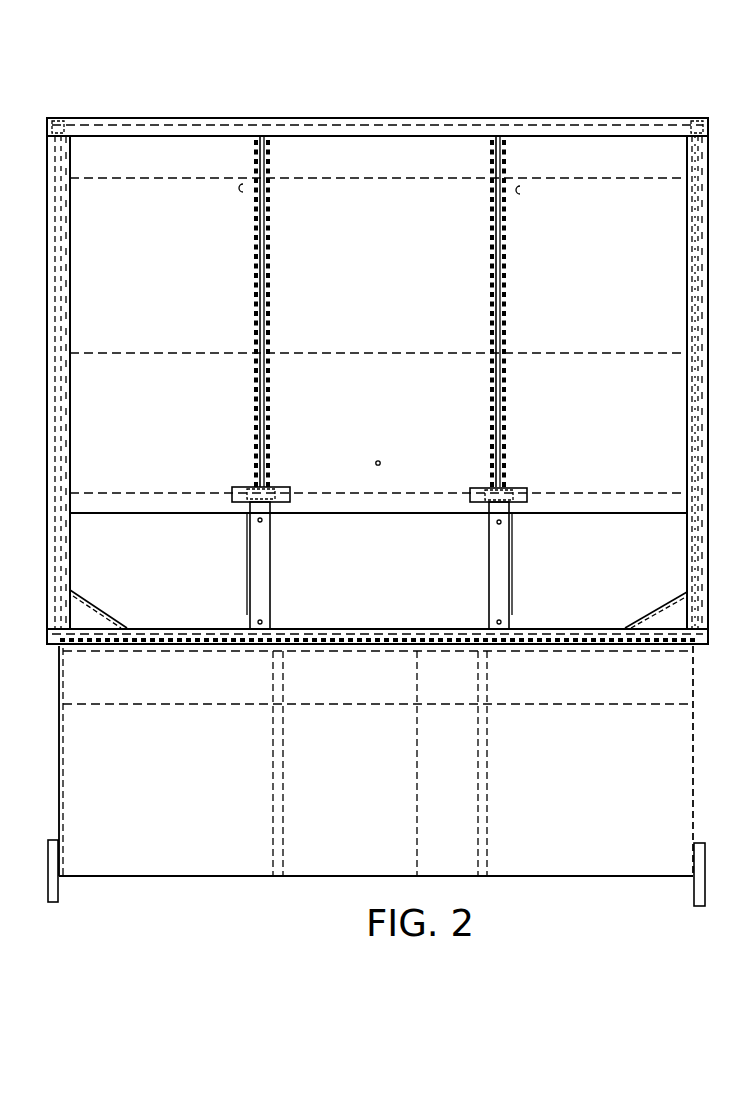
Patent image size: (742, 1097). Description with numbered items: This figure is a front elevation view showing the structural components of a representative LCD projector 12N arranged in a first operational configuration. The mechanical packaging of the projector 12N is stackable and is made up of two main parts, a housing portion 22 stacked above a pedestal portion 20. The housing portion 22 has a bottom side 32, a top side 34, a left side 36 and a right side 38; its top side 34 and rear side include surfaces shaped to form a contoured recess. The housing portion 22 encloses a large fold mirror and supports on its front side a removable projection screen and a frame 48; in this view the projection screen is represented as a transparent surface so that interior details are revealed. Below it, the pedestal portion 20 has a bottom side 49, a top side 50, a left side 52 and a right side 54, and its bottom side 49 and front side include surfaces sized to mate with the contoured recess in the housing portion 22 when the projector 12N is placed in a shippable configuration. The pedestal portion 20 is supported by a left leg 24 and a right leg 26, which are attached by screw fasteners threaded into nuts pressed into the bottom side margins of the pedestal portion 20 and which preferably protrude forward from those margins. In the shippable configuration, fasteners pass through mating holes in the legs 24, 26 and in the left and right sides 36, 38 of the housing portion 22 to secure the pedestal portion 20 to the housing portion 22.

The projector 12N is at (535, 113).
The top side 34 is at (378, 122).
The left side 36 is at (55, 396).
The right side 38 is at (697, 387).
The frame 48 is at (688, 283).
The housing portion 22 is at (384, 394).
The bottom side 32 is at (377, 634).
The top side 50 is at (415, 634).
The pedestal portion 20 is at (387, 778).
The bottom side 49 is at (376, 870).
The left side 52 is at (62, 743).
The right side 54 is at (692, 746).
The left leg 24 is at (60, 884).
The right leg 26 is at (694, 884).